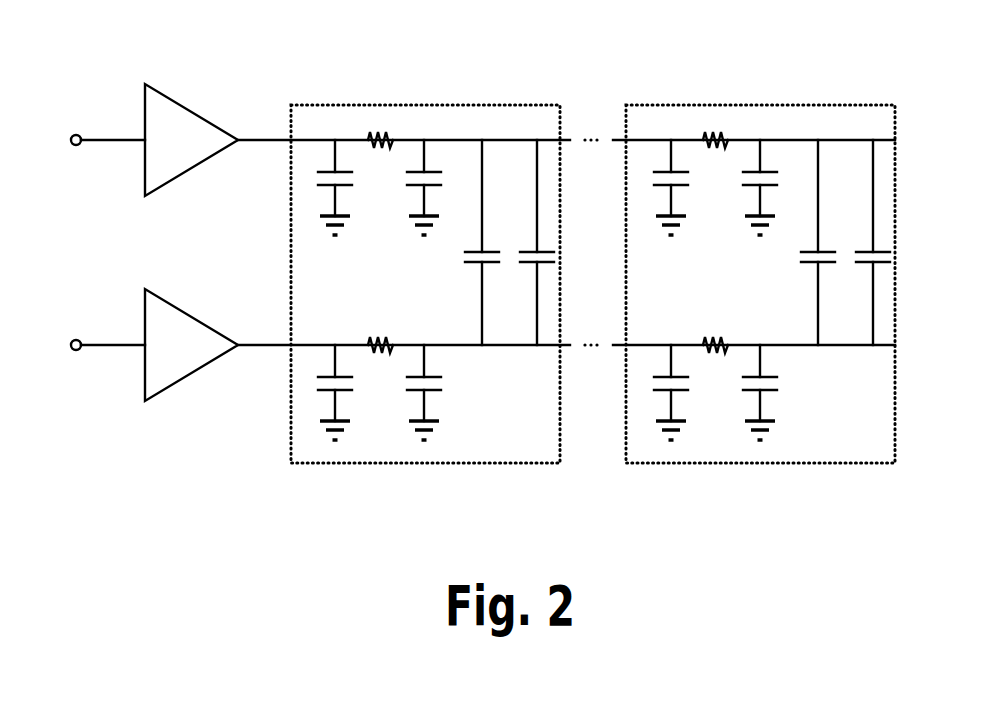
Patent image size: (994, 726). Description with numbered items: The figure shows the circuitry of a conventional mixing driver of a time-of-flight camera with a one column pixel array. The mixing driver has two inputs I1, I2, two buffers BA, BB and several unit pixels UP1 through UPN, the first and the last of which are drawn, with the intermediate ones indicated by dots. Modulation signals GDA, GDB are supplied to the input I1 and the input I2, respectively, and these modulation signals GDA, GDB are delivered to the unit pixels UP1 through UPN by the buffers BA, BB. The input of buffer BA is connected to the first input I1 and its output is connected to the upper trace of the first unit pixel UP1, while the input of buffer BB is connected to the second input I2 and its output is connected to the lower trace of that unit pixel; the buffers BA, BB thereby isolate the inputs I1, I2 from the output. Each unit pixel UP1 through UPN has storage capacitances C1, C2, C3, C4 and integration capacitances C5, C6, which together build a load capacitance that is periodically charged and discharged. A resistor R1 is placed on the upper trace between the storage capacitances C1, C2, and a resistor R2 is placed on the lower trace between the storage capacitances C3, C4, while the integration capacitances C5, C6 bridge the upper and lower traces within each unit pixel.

The first input I1 is at (55, 140).
The second input I2 is at (55, 345).
The modulation signal GDA is at (113, 125).
The modulation signal GDB is at (113, 330).
The buffer BA is at (191, 140).
The buffer BB is at (191, 345).
The unit pixel UP1 is at (515, 105).
The unit pixel UPN is at (860, 105).
The resistor R1 is at (537, 131).
The resistor R2 is at (548, 333).
The storage capacitance C1 is at (516, 187).
The storage capacitance C2 is at (606, 187).
The storage capacitance C3 is at (516, 392).
The storage capacitance C4 is at (606, 392).
The integration capacitance C5 is at (633, 242).
The integration capacitance C6 is at (724, 242).